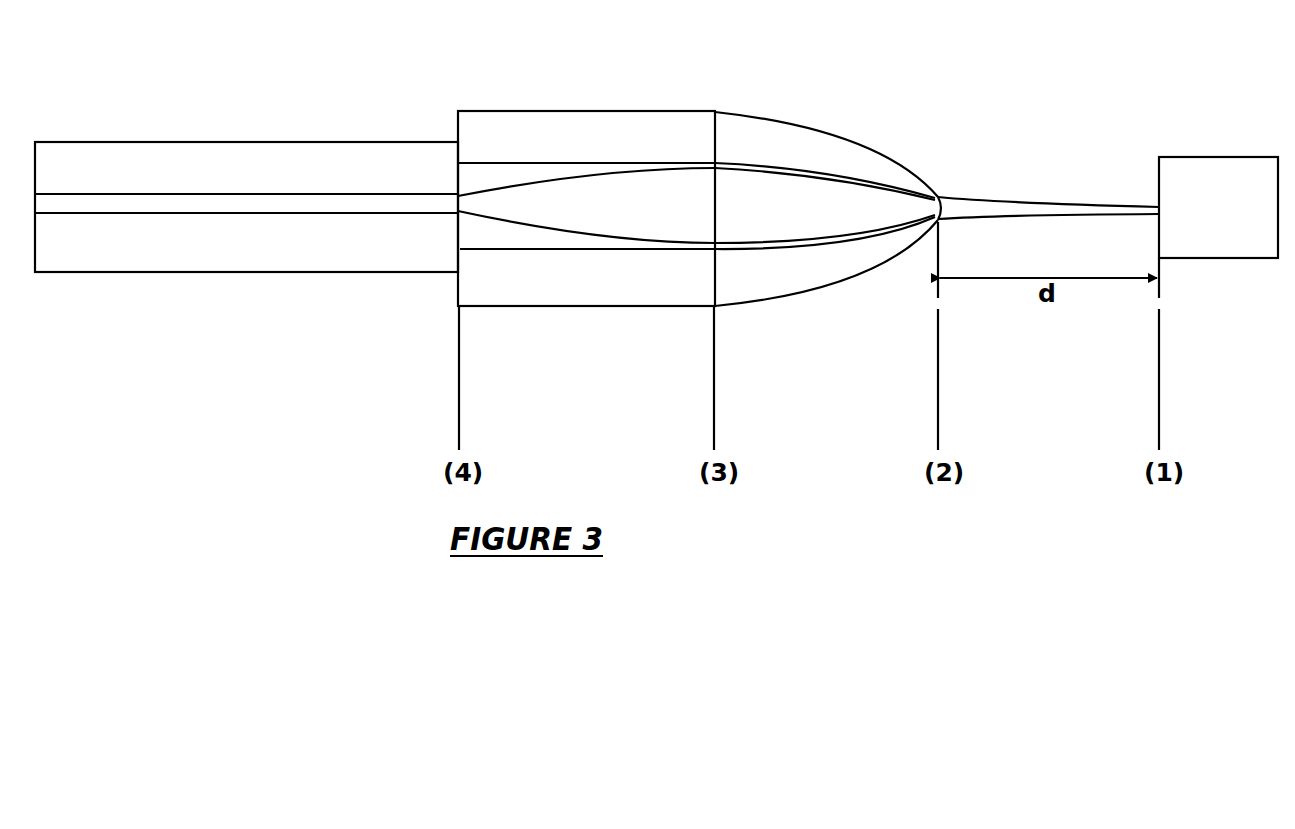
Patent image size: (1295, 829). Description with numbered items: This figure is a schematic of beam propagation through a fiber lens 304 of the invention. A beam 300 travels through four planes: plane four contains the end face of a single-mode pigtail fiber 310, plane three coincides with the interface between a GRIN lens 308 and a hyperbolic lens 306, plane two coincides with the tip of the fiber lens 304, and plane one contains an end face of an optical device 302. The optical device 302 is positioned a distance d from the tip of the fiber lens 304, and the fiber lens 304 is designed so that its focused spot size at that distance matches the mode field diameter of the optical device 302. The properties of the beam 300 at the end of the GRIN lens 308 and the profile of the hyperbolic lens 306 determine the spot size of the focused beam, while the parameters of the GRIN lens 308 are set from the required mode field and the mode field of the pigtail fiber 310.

The beam 300 is at (967, 196).
The optical device 302 is at (1212, 156).
The fiber lens 304 is at (238, 115).
The hyperbolic lens 306 is at (844, 143).
The GRIN lens 308 is at (589, 109).
The single-mode pigtail fiber 310 is at (107, 140).